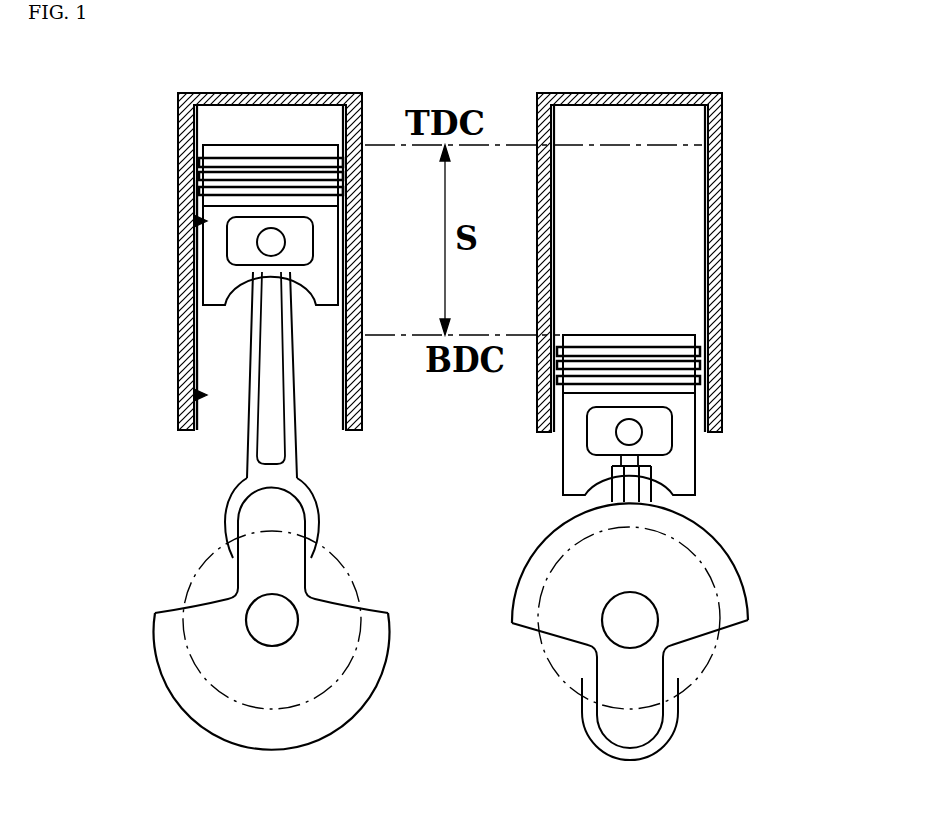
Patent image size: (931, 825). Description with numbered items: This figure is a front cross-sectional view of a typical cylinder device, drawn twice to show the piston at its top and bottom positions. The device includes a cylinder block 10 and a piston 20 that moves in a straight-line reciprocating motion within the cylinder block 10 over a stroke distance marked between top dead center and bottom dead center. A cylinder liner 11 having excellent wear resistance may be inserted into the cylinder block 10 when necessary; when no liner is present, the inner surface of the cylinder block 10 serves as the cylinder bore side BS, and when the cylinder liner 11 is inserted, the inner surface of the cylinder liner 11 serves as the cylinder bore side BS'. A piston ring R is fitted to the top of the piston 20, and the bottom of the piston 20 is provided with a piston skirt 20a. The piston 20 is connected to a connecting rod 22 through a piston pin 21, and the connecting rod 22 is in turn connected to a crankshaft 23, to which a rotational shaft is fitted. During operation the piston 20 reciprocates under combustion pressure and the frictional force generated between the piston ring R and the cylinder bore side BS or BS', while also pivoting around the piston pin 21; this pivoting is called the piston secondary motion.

The cylinder block 10 is at (178, 285).
The cylinder liner 11 is at (178, 372).
The cylinder bore side BS is at (132, 220).
The cylinder bore side BS' is at (127, 395).
The piston 20 is at (636, 334).
The piston ring R is at (698, 351).
The piston skirt 20a is at (560, 470).
The piston pin 21 is at (630, 432).
The connecting rod 22 is at (652, 484).
The crankshaft 23 is at (700, 598).